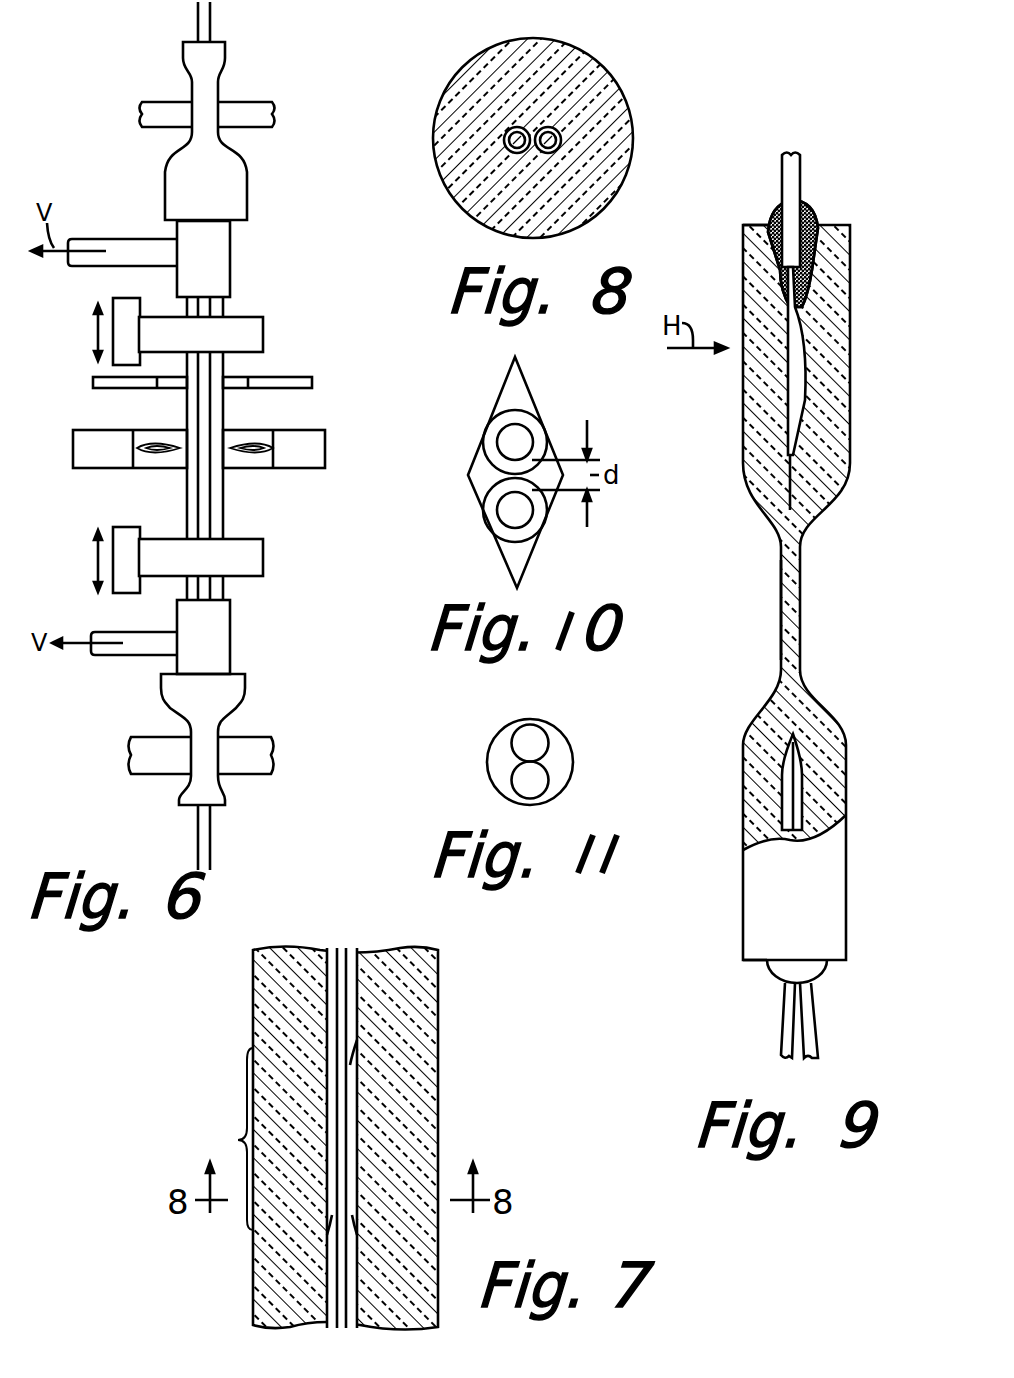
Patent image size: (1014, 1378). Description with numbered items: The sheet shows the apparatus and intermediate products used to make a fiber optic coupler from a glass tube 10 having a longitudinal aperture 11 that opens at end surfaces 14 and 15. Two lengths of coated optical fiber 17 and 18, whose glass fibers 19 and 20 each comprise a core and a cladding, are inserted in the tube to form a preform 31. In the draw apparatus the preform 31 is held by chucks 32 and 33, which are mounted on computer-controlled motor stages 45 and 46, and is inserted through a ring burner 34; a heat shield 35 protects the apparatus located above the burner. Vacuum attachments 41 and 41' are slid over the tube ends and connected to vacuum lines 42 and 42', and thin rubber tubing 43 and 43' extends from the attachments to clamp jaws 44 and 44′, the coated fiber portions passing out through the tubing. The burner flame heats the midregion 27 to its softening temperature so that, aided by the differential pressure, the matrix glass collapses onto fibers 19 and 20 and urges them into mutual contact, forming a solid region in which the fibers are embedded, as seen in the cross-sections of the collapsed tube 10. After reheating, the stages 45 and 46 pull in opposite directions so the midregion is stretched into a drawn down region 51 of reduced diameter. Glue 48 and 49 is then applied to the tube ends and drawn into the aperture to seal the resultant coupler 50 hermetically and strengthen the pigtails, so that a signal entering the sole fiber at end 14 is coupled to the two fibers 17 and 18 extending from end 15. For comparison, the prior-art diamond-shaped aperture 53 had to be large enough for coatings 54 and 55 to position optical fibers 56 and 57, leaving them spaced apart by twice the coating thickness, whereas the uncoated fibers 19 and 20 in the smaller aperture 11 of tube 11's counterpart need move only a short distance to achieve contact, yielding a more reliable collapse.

In FIG. 8, the tube 10 is at (610, 61).
In FIG. 7, the tube 10 is at (437, 993).
In FIG. 11, the aperture 11 is at (490, 760).
In FIG. 9, the end surface 14 is at (753, 225).
In FIG. 9, the end surface 15 is at (755, 962).
In FIG. 6, the coated optical fiber 17 is at (214, 12).
In FIG. 9, the coated optical fiber 17 is at (772, 163).
In FIG. 9, the coated optical fiber 18 is at (828, 1038).
In FIG. 8, the glass fiber 19 is at (552, 125).
In FIG. 11, the glass fiber 19 is at (532, 733).
In FIG. 7, the glass fiber 19 is at (337, 1068).
In FIG. 8, the glass fiber 20 is at (509, 125).
In FIG. 11, the glass fiber 20 is at (532, 785).
In FIG. 7, the glass fiber 20 is at (352, 1125).
In FIG. 7, the midregion 27 is at (220, 1139).
In FIG. 6, the preform 31 is at (228, 494).
In FIG. 6, the chuck 32 is at (263, 330).
In FIG. 6, the chuck 33 is at (263, 555).
In FIG. 6, the ring burner 34 is at (305, 430).
In FIG. 6, the heat shield 35 is at (302, 374).
In FIG. 6, the vacuum attachment 41 is at (236, 637).
In FIG. 6, the upper vacuum attachment 41' is at (238, 259).
In FIG. 6, the vacuum line 42 is at (114, 671).
In FIG. 6, the vacuum line 42' is at (104, 231).
In FIG. 6, the rubber tubing 43 is at (229, 739).
In FIG. 6, the rubber tubing 43' is at (242, 131).
In FIG. 6, the clamp jaws 44 is at (126, 756).
In FIG. 6, the clamp jaws 44′ is at (137, 112).
In FIG. 6, the motor controlled stage 45 is at (125, 307).
In FIG. 6, the motor controlled stage 46 is at (125, 532).
In FIG. 9, the glue 48 is at (810, 212).
In FIG. 9, the glue 49 is at (825, 968).
In FIG. 9, the fiber optic coupler 50 is at (735, 405).
In FIG. 9, the drawn down region 51 is at (800, 612).
In FIG. 10, the central aperture 53 is at (468, 467).
In FIG. 10, the coating 54 is at (498, 422).
In FIG. 10, the coating 55 is at (495, 508).
In FIG. 10, the optical fiber 56 is at (510, 442).
In FIG. 10, the optical fiber 57 is at (512, 515).